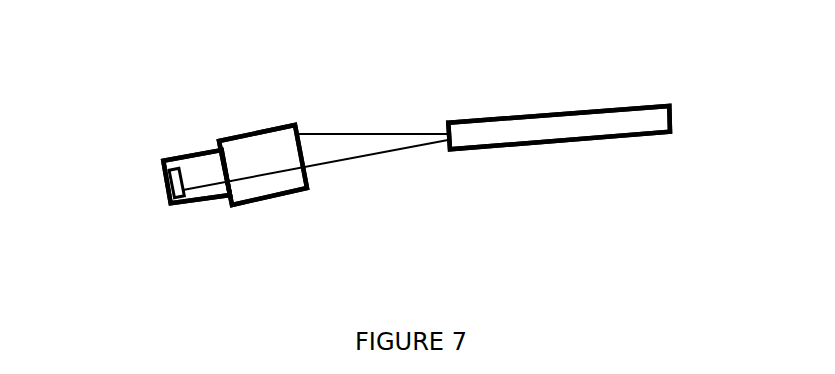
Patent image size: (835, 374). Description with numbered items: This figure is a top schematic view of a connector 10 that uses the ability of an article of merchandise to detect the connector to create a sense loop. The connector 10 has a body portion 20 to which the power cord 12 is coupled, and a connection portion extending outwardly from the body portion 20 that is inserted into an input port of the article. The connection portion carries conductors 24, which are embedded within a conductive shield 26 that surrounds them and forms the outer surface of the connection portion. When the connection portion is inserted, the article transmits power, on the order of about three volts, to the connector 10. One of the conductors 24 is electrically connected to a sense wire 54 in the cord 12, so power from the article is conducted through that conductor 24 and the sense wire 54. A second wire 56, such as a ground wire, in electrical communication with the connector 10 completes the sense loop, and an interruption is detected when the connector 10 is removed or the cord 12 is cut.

The connector 10 is at (190, 146).
The power cord 12 is at (632, 105).
The body portion 20 is at (250, 135).
The conductors 24 is at (168, 177).
The conductive shield 26 is at (200, 197).
The sense wire 54 is at (335, 168).
The second wire 56 is at (327, 133).